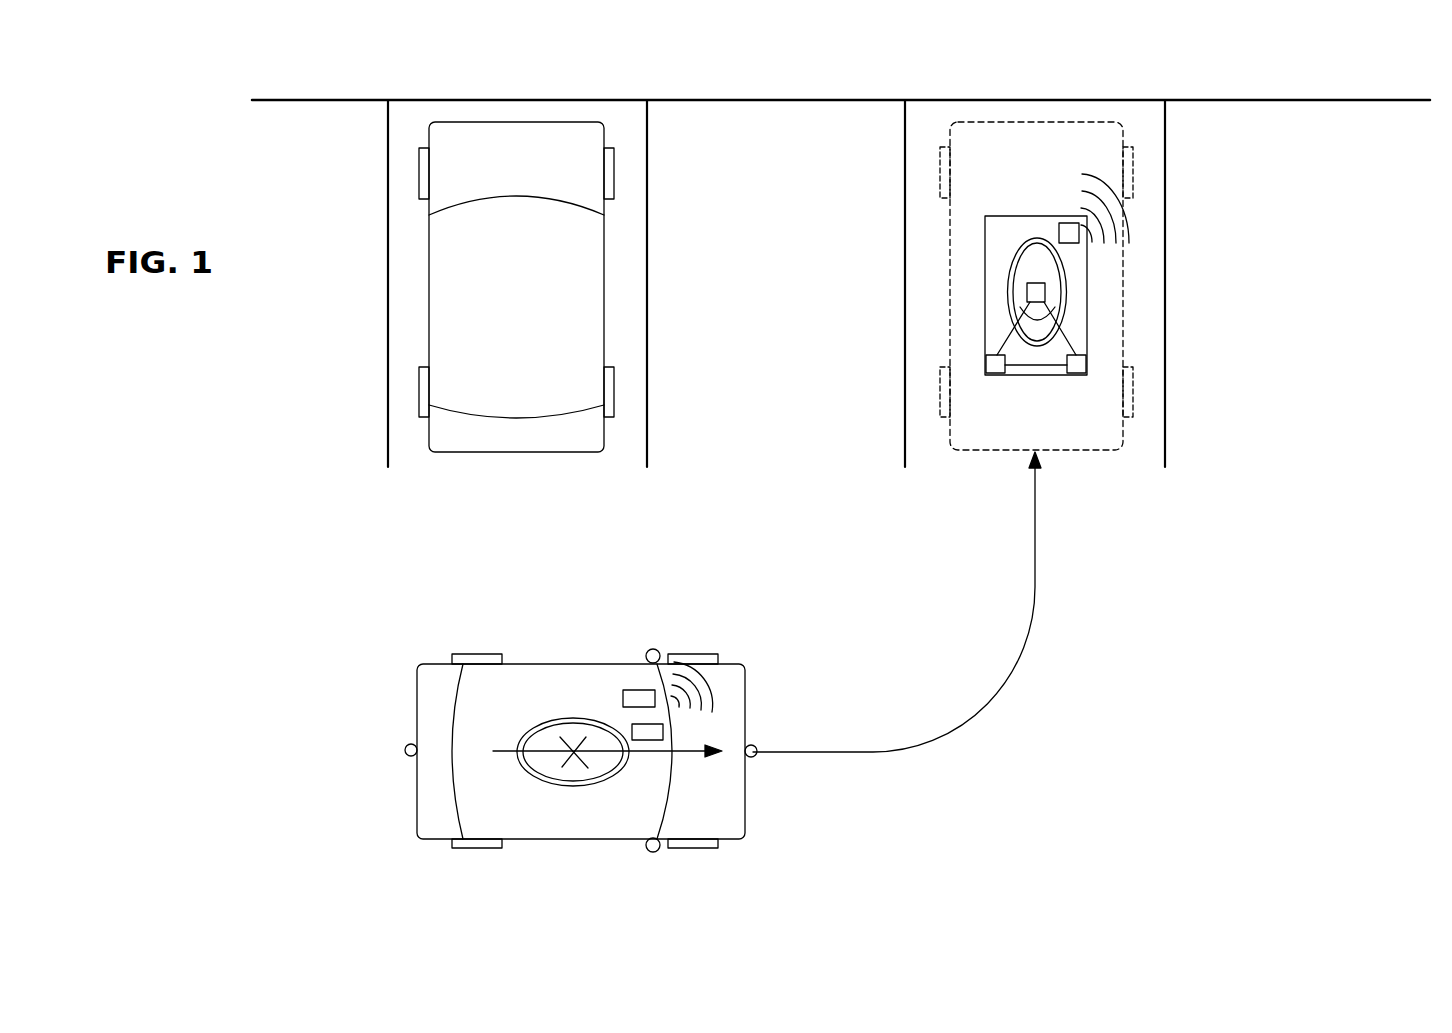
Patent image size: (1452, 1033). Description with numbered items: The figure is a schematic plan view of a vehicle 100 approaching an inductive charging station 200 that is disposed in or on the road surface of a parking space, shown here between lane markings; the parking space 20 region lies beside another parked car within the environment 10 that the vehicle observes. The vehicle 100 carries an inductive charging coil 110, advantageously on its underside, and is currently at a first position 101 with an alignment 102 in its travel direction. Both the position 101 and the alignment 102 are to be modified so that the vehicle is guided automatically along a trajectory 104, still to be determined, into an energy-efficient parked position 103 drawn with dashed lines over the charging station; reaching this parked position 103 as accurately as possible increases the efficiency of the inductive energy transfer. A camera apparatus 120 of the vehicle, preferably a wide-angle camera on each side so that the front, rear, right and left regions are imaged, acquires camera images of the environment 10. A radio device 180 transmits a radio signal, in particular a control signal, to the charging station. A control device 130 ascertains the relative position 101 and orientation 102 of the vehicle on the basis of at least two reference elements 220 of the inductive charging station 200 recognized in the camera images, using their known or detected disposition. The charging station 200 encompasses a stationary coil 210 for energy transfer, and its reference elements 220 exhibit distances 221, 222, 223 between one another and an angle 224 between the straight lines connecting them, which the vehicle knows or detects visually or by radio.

The environment 10 is at (1269, 700).
The parking space 20 is at (923, 138).
The vehicle 100 is at (525, 685).
The first position 101 is at (573, 764).
The alignment 102 is at (690, 755).
The parked position 103 is at (1077, 138).
The trajectory 104 is at (973, 712).
The inductive charging coil 110 is at (577, 773).
The camera apparatus 120 is at (653, 649).
The control device 130 is at (657, 732).
The radio device 180 is at (637, 693).
The inductive charging station 200 is at (1008, 223).
The coil 210 is at (1010, 253).
The reference elements 220 is at (1027, 293).
The distance 221 is at (1037, 367).
The distance 222 is at (1068, 334).
The distance 223 is at (1006, 340).
The angle 224 is at (1038, 312).